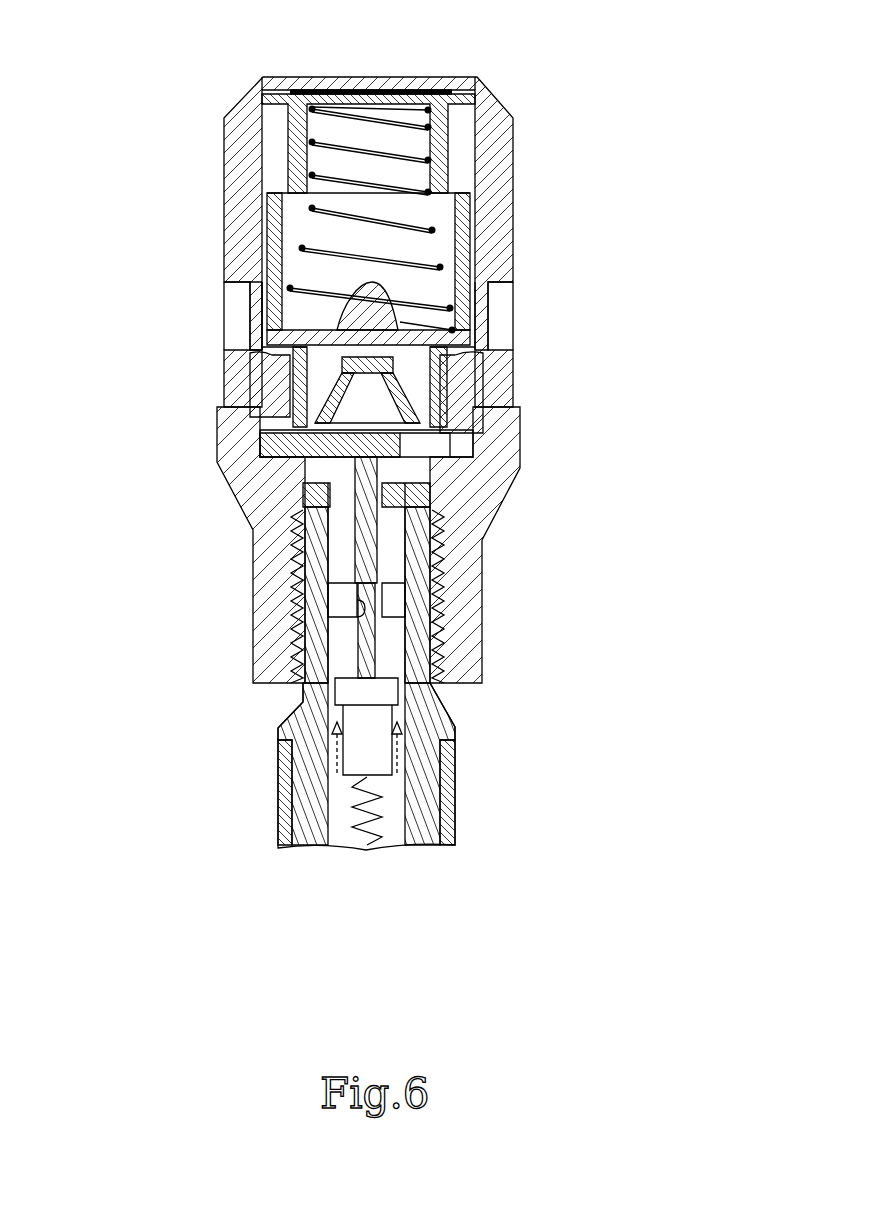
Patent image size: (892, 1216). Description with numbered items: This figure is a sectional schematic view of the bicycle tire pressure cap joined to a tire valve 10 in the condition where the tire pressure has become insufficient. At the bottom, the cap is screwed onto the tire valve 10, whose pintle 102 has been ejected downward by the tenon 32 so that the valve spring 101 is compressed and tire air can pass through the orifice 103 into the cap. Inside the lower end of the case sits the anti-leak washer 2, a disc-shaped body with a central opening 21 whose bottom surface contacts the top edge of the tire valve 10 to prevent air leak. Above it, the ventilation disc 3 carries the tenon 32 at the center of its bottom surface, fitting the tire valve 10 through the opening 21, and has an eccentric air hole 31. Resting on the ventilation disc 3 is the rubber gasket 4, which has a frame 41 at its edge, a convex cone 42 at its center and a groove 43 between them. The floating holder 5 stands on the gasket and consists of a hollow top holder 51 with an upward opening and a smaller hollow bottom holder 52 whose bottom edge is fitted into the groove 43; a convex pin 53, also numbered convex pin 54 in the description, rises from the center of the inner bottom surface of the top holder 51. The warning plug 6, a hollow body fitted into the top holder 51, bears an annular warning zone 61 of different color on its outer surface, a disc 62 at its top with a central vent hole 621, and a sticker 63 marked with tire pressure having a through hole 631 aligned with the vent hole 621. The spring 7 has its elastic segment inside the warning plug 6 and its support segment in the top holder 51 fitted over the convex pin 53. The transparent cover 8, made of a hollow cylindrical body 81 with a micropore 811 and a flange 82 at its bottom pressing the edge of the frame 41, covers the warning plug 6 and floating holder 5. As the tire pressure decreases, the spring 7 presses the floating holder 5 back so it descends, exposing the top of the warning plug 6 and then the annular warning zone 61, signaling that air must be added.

The anti-leak washer 2 is at (450, 540).
The opening 21 is at (430, 510).
The ventilation disc 3 is at (447, 569).
The air hole 31 is at (410, 470).
The tenon 32 is at (410, 585).
The rubber gasket 4 is at (276, 395).
The frame 41 is at (258, 418).
The convex cone 42 is at (292, 348).
The groove 43 is at (275, 385).
The floating holder 5 is at (455, 342).
The top holder 51 is at (490, 262).
The bottom holder 52 is at (454, 389).
The convex pin 53 is at (430, 350).
The convex pin 54 is at (385, 290).
The warning plug 6 is at (397, 230).
The annular warning zone 61 is at (493, 150).
The disc 62 is at (445, 112).
The vent hole 621 is at (368, 98).
The sticker 63 is at (415, 88).
The through hole 631 is at (372, 88).
The spring 7 is at (300, 207).
The transparent cover 8 is at (163, 294).
The hollow cylindrical body 81 is at (263, 255).
The micropore 811 is at (372, 88).
The flange 82 is at (250, 288).
The tire valve 10 is at (285, 716).
The valve spring 101 is at (337, 792).
The pintle 102 is at (367, 657).
The orifice 103 is at (343, 603).